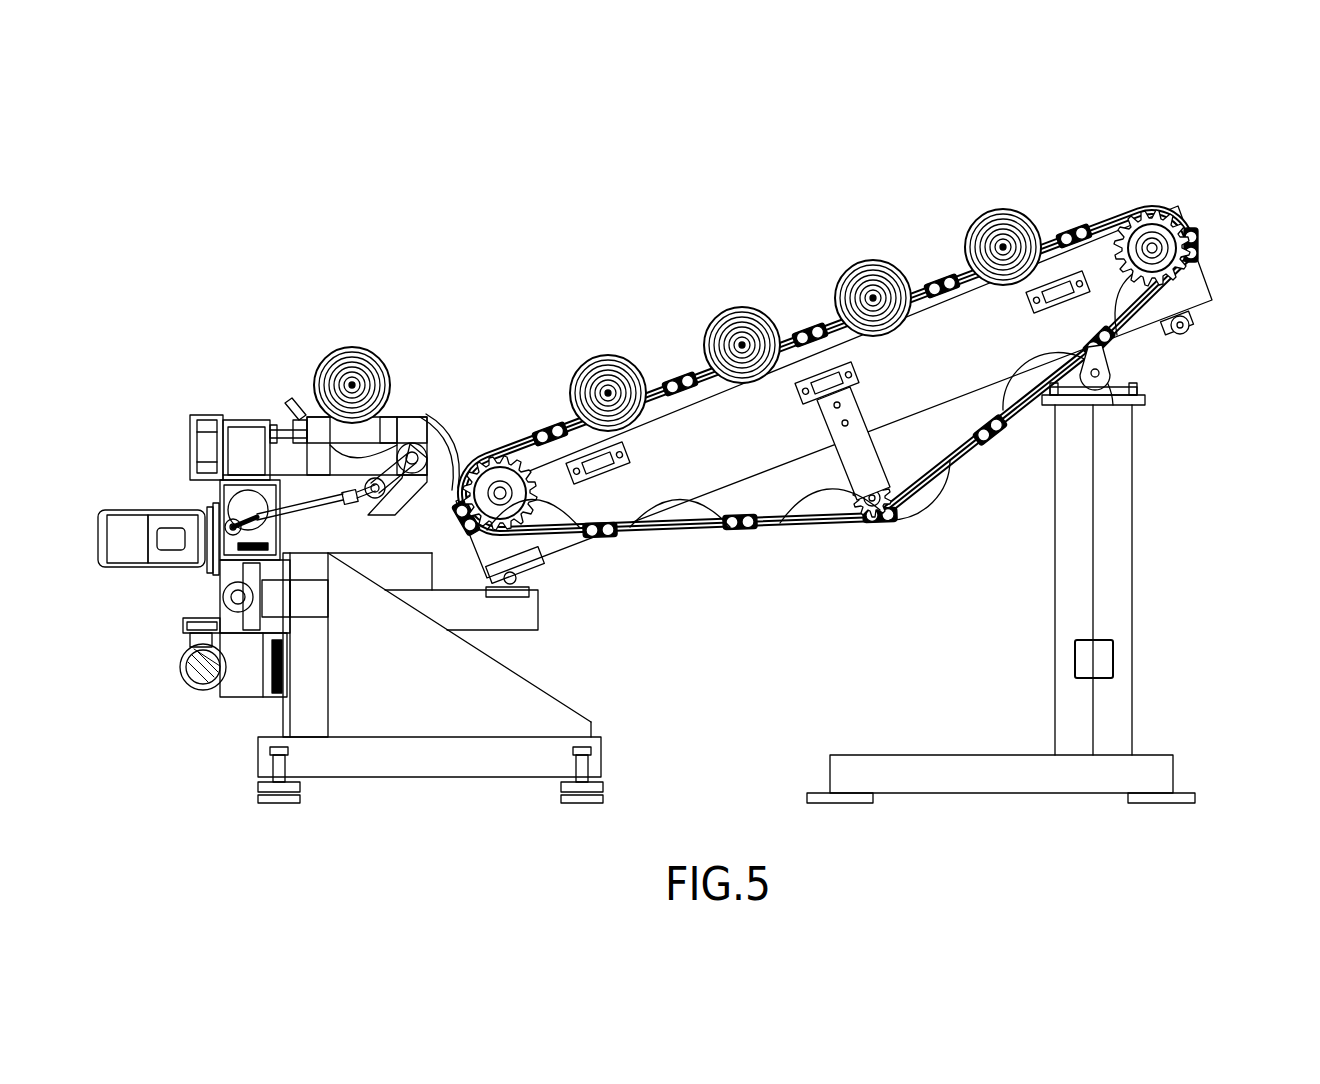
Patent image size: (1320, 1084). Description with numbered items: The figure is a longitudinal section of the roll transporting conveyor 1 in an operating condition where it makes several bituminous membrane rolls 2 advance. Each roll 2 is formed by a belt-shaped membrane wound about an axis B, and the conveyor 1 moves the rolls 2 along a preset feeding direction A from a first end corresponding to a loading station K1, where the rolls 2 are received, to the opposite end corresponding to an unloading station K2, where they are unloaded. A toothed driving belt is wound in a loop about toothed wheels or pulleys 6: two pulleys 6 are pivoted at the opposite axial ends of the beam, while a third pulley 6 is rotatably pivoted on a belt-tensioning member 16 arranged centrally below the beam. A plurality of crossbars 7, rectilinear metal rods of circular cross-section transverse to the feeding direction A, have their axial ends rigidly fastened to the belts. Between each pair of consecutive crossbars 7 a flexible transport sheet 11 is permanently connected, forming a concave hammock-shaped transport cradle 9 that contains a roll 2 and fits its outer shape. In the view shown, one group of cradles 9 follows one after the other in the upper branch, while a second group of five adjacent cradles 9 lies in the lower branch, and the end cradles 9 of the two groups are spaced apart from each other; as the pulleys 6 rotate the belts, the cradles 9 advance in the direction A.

The roll transporting conveyor 1 is at (1207, 610).
The bituminous membrane roll 2 is at (375, 342).
The toothed wheel or pulley 6 is at (1150, 218).
The crossbar 7 is at (563, 416).
The hammock-shaped transport cradle 9 is at (1058, 402).
The transport sheet 11 is at (672, 567).
The belt-tensioning member 16 is at (887, 449).
The feeding direction A is at (1122, 193).
The axis B is at (322, 372).
The loading station K1 is at (483, 433).
The unloading station K2 is at (1140, 184).